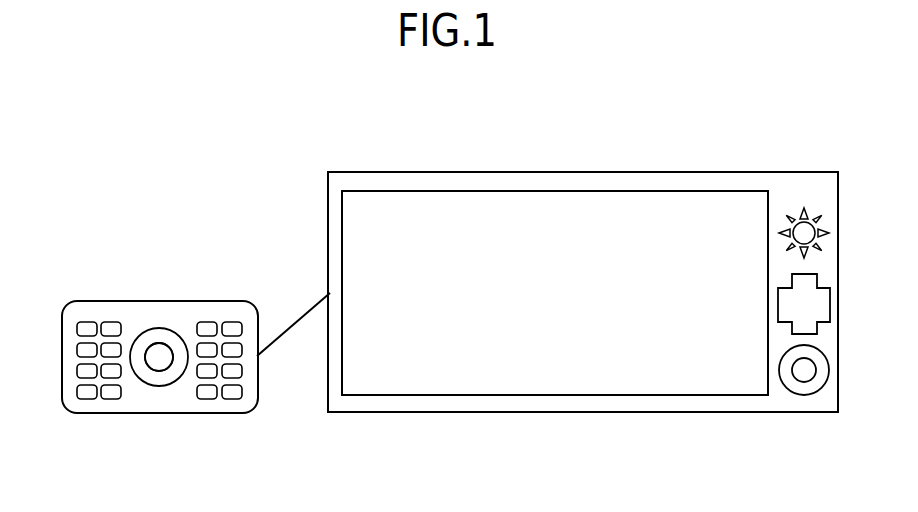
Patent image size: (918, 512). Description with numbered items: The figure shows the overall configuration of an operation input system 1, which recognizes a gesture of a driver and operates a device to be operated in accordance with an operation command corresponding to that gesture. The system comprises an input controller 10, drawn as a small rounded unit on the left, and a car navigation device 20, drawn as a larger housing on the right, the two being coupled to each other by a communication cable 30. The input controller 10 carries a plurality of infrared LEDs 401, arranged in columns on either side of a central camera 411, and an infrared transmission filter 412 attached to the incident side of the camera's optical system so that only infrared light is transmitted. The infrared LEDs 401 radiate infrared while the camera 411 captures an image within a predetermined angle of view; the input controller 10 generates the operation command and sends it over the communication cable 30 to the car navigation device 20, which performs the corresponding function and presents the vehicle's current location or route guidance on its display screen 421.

The operation input system 1 is at (513, 133).
The input controller 10 is at (214, 300).
The car navigation device 20 is at (785, 171).
The communication cable 30 is at (298, 317).
The infrared LEDs 401 is at (90, 324).
The camera 411 is at (153, 380).
The infrared transmission filter 412 is at (159, 357).
The display screen 421 is at (673, 205).